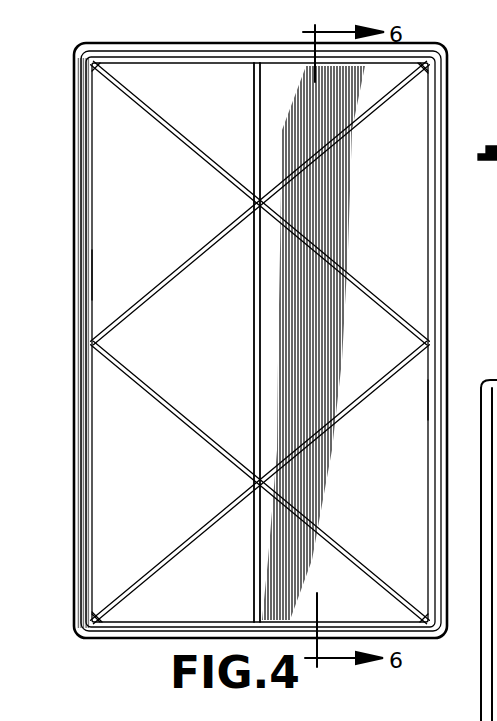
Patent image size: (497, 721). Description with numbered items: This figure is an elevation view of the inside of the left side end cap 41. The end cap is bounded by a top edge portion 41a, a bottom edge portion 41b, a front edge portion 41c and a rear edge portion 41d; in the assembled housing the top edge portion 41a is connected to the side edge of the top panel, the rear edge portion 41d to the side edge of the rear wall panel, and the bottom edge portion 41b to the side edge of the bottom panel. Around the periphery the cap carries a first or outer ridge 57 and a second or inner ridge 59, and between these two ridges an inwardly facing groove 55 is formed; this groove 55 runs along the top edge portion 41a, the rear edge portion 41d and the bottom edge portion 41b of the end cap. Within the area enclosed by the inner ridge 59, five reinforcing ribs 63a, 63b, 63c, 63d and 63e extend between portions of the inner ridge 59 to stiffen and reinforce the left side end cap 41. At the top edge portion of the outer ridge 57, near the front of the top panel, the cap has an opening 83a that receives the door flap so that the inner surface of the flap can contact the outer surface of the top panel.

The opening 83a is at (86, 26).
The second or inner ridge 59 is at (196, 51).
The first or outer ridge 57 is at (229, 27).
The inwardly facing groove 55 is at (271, 28).
The left side end cap 41 is at (405, 147).
The top edge portion 41a is at (388, 77).
The bottom edge portion 41b is at (140, 607).
The front edge portion 41c is at (100, 290).
The rear edge portion 41d is at (410, 405).
The reinforcing rib 63a is at (208, 241).
The reinforcing rib 63b is at (168, 127).
The reinforcing rib 63c is at (249, 355).
The reinforcing rib 63d is at (197, 432).
The reinforcing rib 63e is at (333, 420).